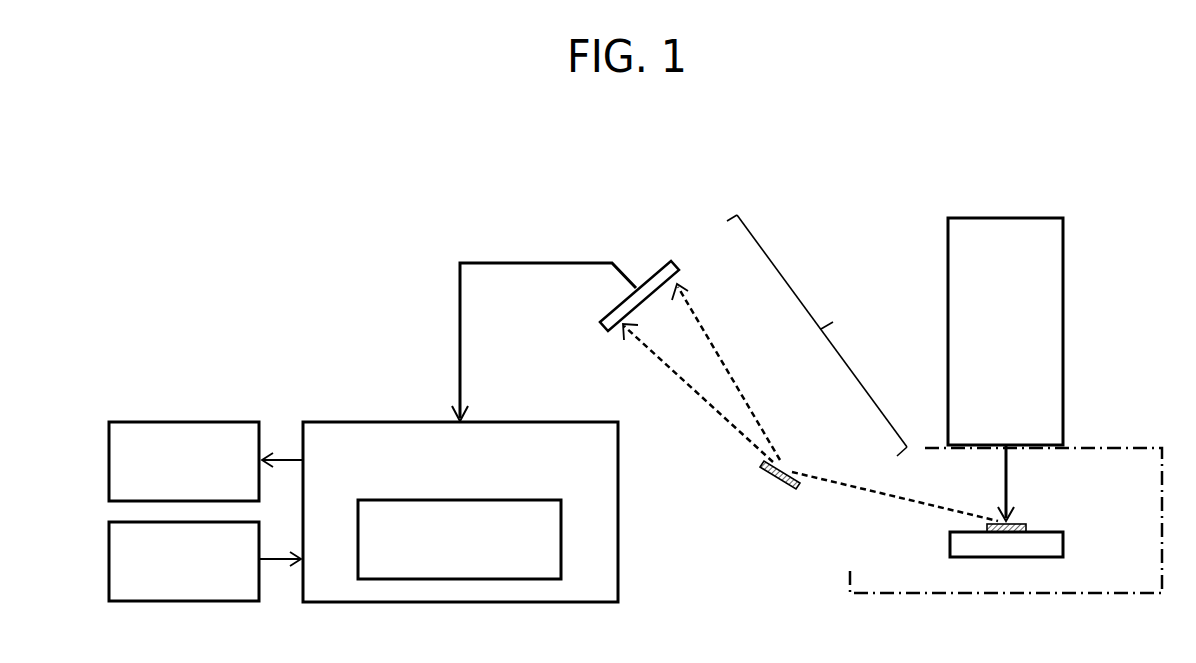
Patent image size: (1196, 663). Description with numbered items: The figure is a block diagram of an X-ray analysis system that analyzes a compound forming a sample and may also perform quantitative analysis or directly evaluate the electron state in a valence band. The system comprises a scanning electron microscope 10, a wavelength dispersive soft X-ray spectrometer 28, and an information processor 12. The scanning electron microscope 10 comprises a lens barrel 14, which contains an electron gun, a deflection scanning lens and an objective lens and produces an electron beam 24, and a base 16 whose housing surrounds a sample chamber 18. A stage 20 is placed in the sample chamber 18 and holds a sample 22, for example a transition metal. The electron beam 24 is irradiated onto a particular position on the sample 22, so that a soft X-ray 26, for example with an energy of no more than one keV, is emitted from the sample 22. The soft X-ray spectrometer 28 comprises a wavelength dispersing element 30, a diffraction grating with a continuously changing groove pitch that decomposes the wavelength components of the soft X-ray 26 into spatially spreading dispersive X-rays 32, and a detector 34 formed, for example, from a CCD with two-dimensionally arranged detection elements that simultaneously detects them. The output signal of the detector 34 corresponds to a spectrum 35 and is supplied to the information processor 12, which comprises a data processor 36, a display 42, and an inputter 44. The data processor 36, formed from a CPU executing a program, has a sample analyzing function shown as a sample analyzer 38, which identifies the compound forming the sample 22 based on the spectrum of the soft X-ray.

The scanning electron microscope 10 is at (1021, 184).
The information processor 12 is at (368, 250).
The lens barrel 14 is at (1063, 313).
The base 16 is at (1104, 445).
The sample chamber 18 is at (1115, 488).
The stage 20 is at (1063, 540).
The sample 22 is at (1018, 524).
The electron beam 24 is at (1004, 483).
The X-ray 26 is at (883, 497).
The wavelength dispersive soft X-ray spectrometer 28 is at (817, 335).
The wavelength dispersing element 30 is at (778, 484).
The dispersive X-rays 32 is at (726, 361).
The detector 34 is at (594, 330).
The spectrum 35 is at (542, 263).
The data processor 36 is at (520, 422).
The sample analyzer 38 is at (561, 531).
The display 42 is at (187, 422).
The inputter 44 is at (180, 601).